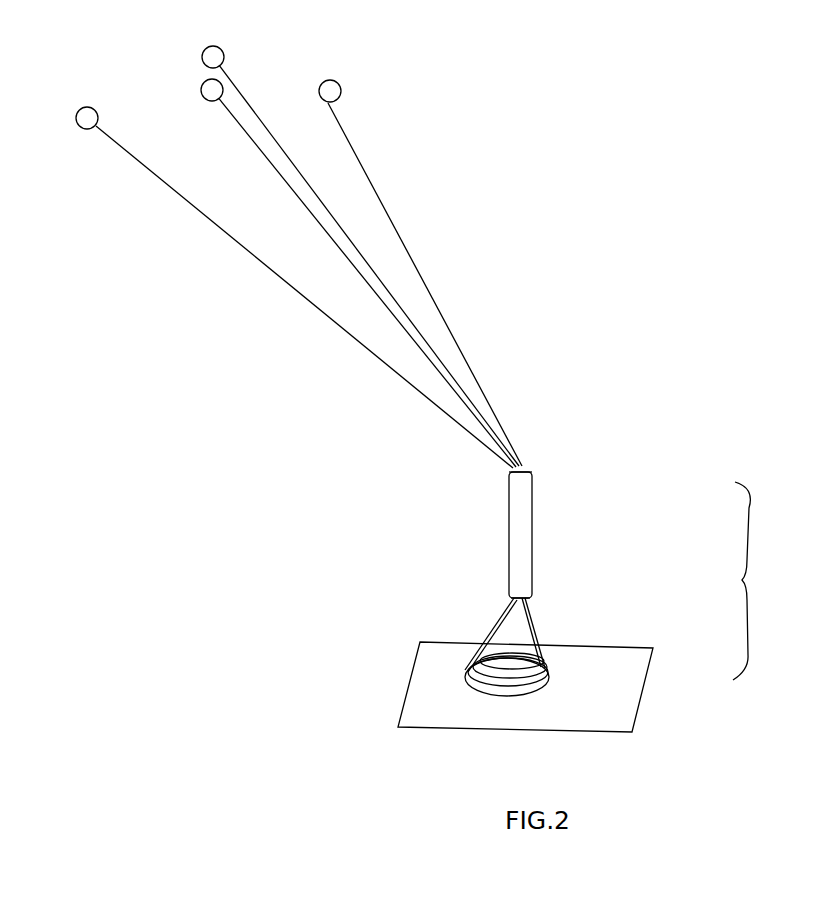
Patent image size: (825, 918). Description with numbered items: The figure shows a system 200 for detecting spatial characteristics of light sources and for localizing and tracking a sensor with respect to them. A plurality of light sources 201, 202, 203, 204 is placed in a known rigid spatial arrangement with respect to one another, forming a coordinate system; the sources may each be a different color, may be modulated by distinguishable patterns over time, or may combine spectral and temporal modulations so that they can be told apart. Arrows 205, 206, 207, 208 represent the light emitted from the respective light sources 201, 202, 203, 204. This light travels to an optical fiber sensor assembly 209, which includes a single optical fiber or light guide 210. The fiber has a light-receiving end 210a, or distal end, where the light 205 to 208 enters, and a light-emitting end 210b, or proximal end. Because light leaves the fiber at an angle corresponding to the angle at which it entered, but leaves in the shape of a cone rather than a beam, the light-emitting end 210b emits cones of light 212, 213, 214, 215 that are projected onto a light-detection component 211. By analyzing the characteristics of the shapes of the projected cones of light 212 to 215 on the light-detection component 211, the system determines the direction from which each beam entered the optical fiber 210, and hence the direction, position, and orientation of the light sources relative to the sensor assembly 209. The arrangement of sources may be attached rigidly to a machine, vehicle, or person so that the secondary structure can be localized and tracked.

The system 200 is at (655, 170).
The light source 201 is at (76, 112).
The light source 202 is at (201, 91).
The light source 203 is at (232, 40).
The light source 204 is at (333, 80).
The arrow representing emitted light 205 is at (210, 222).
The arrow representing emitted light 206 is at (285, 172).
The arrow representing emitted light 207 is at (285, 152).
The arrow representing emitted light 208 is at (371, 173).
The optical fiber sensor assembly 209 is at (764, 581).
The optical fiber or light guide 210 is at (532, 520).
The light-receiving end 210a is at (533, 471).
The light-emitting end 210b is at (508, 607).
The light-detection component 211 is at (650, 676).
The cone of light 212 is at (502, 633).
The cone of light 213 is at (537, 641).
The cone of light 214 is at (548, 660).
The cone of light 215 is at (578, 662).